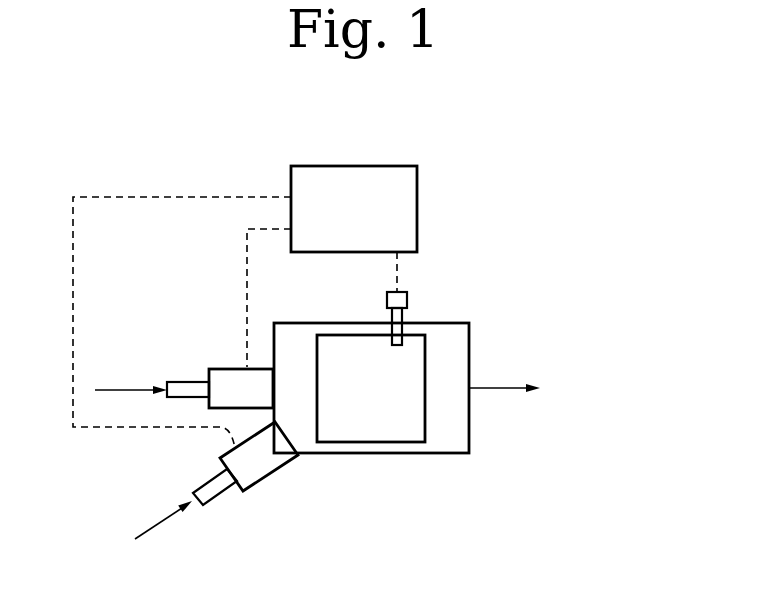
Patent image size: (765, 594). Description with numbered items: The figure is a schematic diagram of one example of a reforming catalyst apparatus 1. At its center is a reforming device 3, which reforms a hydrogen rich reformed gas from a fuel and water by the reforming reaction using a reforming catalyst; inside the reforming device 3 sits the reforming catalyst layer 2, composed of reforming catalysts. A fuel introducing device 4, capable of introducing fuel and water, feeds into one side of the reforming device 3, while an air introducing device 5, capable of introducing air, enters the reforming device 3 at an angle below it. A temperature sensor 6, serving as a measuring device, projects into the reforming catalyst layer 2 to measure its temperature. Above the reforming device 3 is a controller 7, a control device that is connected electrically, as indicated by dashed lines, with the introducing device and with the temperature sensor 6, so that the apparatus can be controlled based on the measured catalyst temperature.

The reforming catalyst apparatus 1 is at (457, 288).
The reforming catalyst layer 2 is at (367, 442).
The reforming device 3 is at (437, 453).
The fuel introducing device 4 is at (237, 367).
The air introducing device 5 is at (263, 478).
The temperature sensor 6 is at (387, 298).
The controller 7 is at (356, 166).